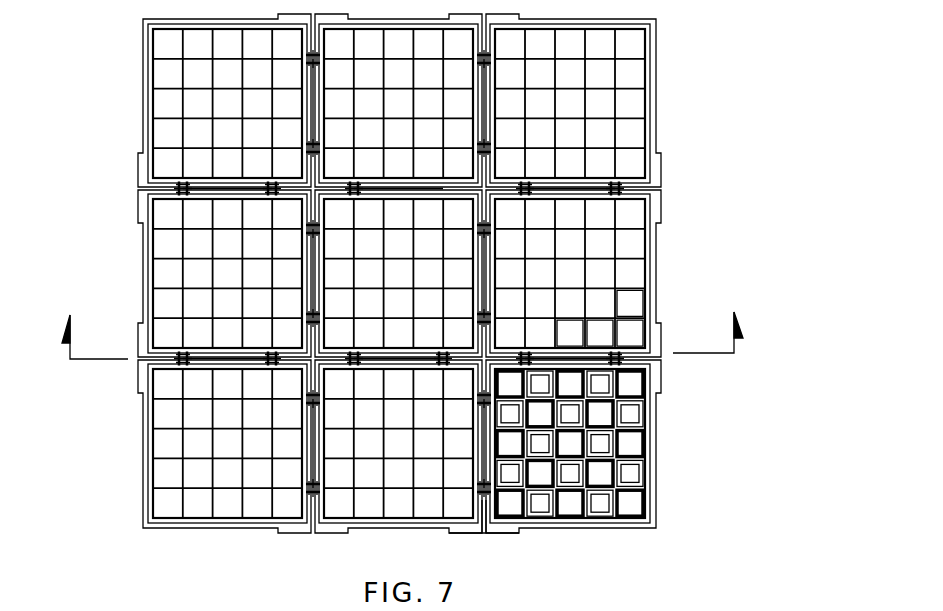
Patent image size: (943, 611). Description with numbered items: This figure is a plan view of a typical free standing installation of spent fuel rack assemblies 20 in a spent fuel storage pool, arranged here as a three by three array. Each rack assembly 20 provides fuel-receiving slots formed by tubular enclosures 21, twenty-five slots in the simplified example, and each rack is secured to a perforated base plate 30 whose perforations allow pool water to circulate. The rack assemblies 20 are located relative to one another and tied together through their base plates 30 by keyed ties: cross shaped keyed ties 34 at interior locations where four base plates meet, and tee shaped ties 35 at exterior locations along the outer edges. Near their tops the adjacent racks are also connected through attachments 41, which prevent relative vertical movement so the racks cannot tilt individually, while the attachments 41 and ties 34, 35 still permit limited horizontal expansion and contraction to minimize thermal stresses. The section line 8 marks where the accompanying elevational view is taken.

The rack assembly 20 is at (593, 103).
The tubular enclosure 21 is at (633, 506).
The perforated base plate 30 is at (598, 530).
The cross shaped keyed tie 34 is at (477, 356).
The tee shaped keyed tie 35 is at (487, 533).
The attachment 41 is at (308, 490).
The section line 8- 8 is at (401, 330).